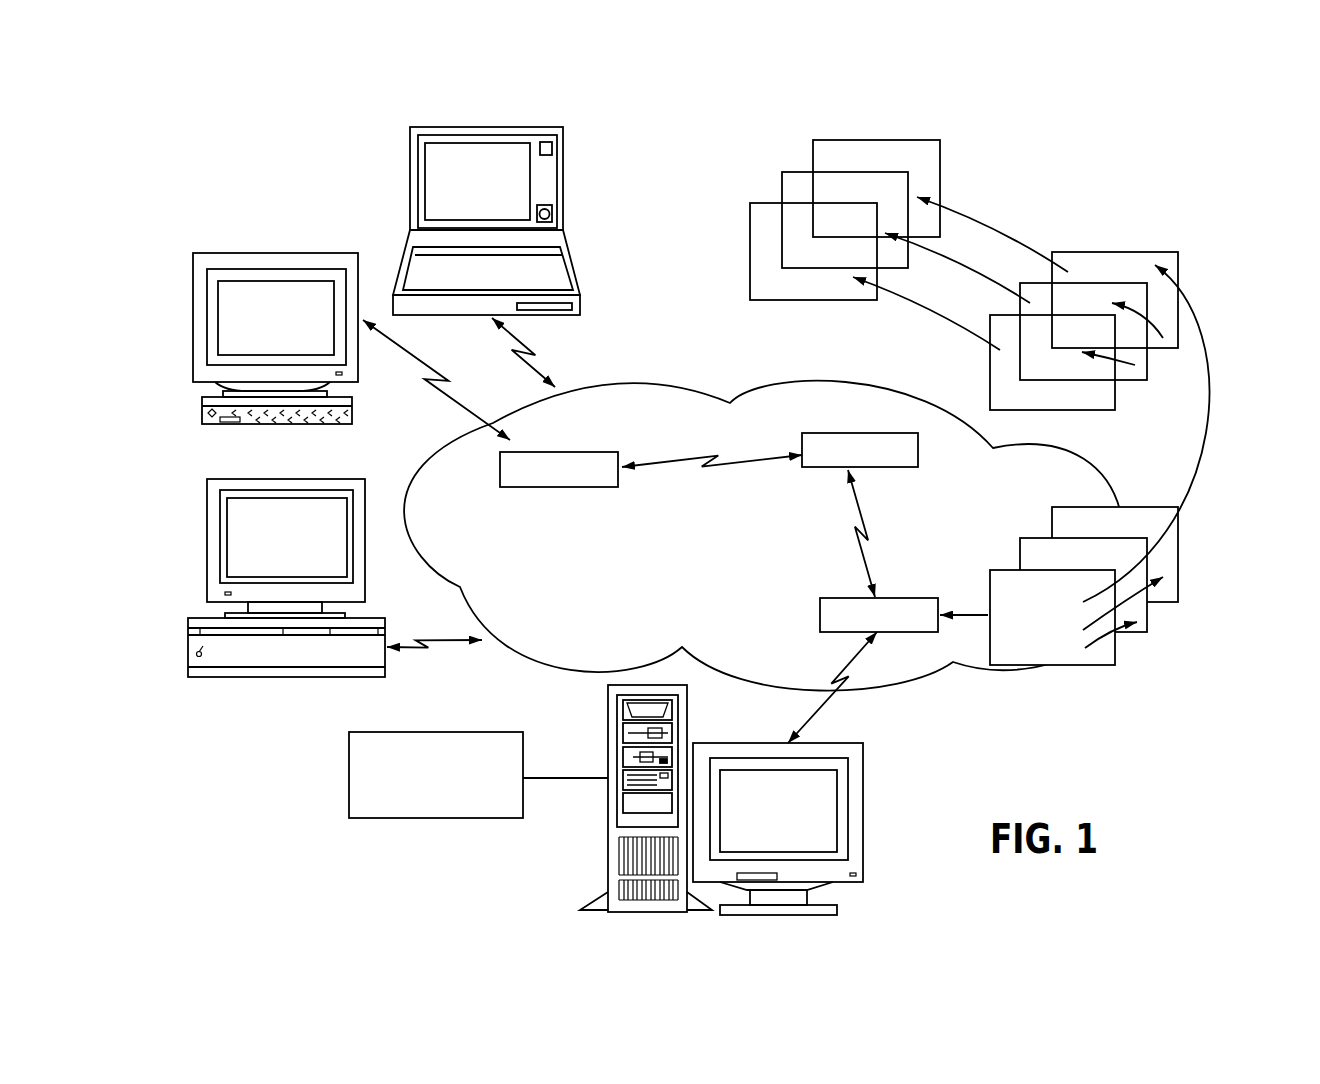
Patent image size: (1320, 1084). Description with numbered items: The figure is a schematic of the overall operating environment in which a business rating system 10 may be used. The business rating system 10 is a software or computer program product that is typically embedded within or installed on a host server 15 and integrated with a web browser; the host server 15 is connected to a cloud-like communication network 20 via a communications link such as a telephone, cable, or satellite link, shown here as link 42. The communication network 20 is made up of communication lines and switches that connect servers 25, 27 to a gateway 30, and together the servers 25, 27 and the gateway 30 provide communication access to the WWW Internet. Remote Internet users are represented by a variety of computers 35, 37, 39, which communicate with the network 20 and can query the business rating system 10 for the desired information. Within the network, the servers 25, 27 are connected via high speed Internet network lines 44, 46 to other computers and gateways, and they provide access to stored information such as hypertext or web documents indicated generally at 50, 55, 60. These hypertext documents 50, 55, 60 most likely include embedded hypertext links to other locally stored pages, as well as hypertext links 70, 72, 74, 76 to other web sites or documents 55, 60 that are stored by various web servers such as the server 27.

The business rating system 10 is at (349, 768).
The host server 15 is at (600, 725).
The communication network 20 is at (667, 380).
The server 25 is at (858, 598).
The server 27 is at (872, 433).
The gateway 30 is at (553, 488).
The computer 35 is at (573, 270).
The computer 37 is at (333, 253).
The computer 39 is at (333, 479).
The communication link 42 is at (798, 713).
The high speed Internet network line 44 is at (870, 563).
The high speed Internet network line 46 is at (700, 458).
The hypertext documents 50 is at (1185, 577).
The hypertext documents 55 is at (1188, 277).
The hypertext documents 60 is at (768, 190).
The hypertext link 70 is at (1210, 432).
The hypertext link 72 is at (1010, 235).
The hypertext link 74 is at (980, 272).
The hypertext link 76 is at (933, 310).